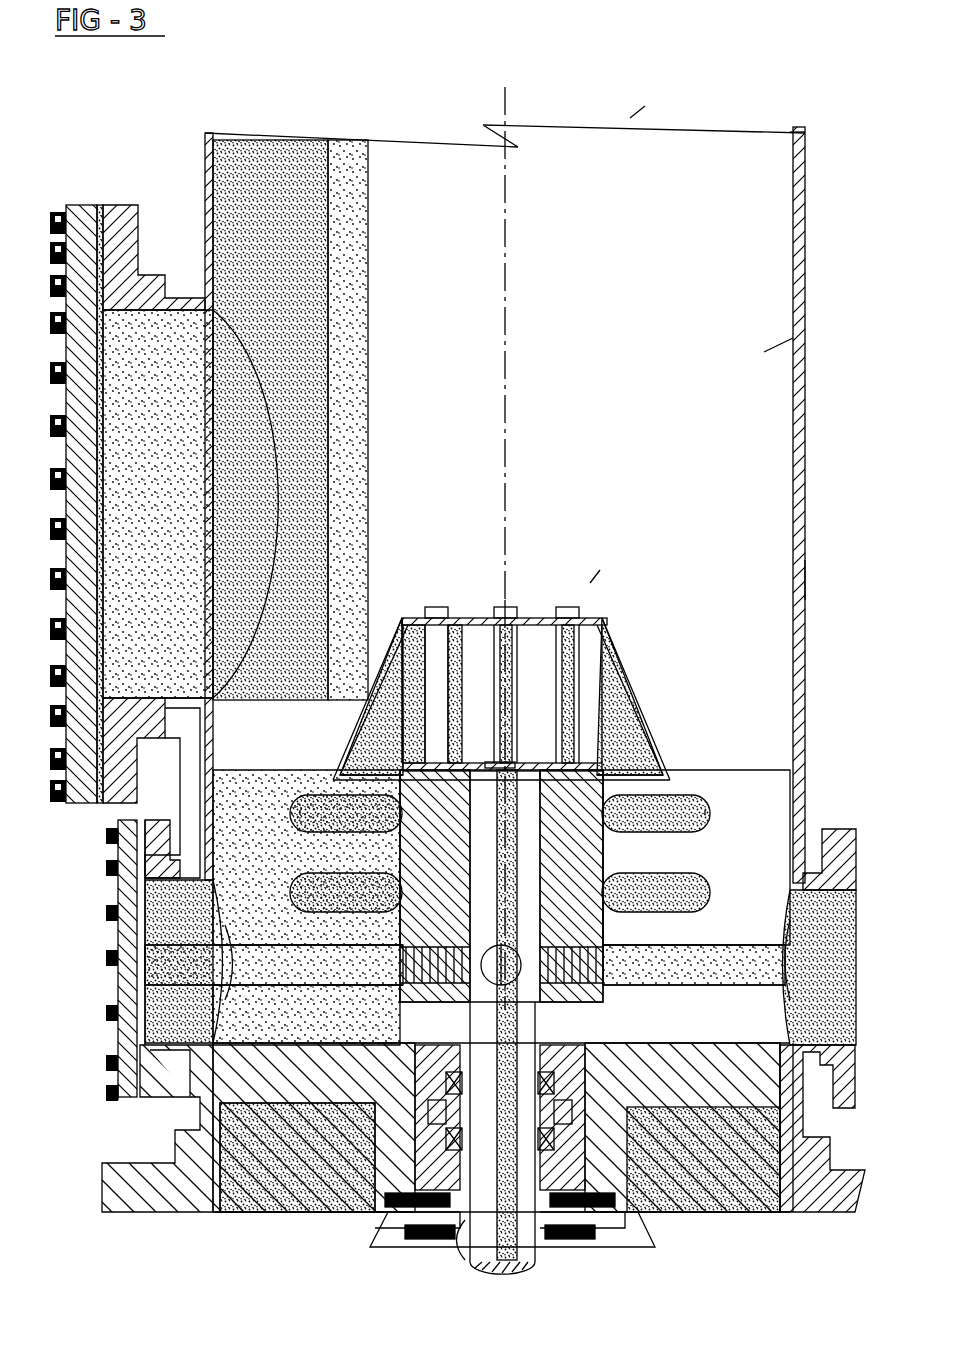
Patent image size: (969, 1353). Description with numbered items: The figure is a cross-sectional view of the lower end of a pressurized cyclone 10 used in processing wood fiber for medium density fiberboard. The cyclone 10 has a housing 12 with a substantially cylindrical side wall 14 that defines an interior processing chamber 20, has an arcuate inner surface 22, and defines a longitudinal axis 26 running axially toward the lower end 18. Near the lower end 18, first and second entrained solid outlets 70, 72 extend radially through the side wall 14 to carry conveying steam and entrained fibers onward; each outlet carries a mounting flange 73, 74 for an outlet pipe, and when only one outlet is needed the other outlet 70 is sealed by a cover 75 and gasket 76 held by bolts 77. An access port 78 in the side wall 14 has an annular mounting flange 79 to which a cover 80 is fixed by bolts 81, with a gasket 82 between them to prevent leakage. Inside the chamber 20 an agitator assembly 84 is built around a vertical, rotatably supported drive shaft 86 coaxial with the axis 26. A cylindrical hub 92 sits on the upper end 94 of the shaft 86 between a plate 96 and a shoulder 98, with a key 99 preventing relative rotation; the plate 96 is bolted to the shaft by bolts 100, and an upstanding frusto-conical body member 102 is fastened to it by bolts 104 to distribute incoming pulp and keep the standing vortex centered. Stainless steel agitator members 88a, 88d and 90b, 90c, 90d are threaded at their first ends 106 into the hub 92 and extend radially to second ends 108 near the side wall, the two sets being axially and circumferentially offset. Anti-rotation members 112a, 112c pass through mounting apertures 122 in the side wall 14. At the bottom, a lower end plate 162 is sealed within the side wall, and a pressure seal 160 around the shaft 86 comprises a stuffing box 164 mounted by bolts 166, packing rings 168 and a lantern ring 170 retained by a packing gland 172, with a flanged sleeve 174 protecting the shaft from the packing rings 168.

The pressurized cyclone 10 is at (630, 118).
The housing 12 is at (806, 264).
The side wall 14 is at (805, 580).
The lower end 18 is at (805, 170).
The interior processing chamber 20 is at (780, 350).
The inner surface 22 is at (475, 333).
The longitudinal axis 26 is at (505, 103).
The first entrained solid outlet 70 is at (118, 988).
The second entrained solid outlet 72 is at (850, 968).
The mounting flange 73 is at (150, 815).
The mounting flange 74 is at (838, 822).
The cover 75 is at (120, 945).
The gasket 76 is at (225, 963).
The bolts 77 is at (108, 870).
The access port 78 is at (185, 557).
The annular mounting flange 79 is at (125, 210).
The cover 80 is at (100, 445).
The bolts 81 is at (55, 235).
The gasket 82 is at (112, 262).
The agitator assembly 84 is at (590, 583).
The drive shaft 86 is at (630, 1080).
The agitator member 88a is at (340, 785).
The agitator member 88d is at (695, 812).
The agitator member 90b is at (157, 1128).
The agitator member 90c is at (475, 990).
The agitator member 90d is at (705, 985).
The cylindrical hub 92 is at (603, 933).
The upper end 94 is at (470, 838).
The plate 96 is at (640, 745).
The shoulder 98 is at (565, 995).
The key 99 is at (590, 790).
The bolts 100 is at (505, 758).
The frusto-conical body member 102 is at (385, 620).
The bolts 104 is at (570, 607).
The first end 106 is at (530, 960).
The second end 108 is at (215, 948).
The anti-rotation member 112a is at (300, 875).
The anti-rotation member 112c is at (695, 890).
The mounting apertures 122 is at (290, 810).
The pressure seal 160 is at (372, 1228).
The lower end plate 162 is at (720, 1120).
The stuffing box 164 is at (610, 1210).
The bolts 166 is at (625, 1240).
The packing rings 168 is at (460, 1170).
The lantern ring 170 is at (620, 1140).
The packing gland 172 is at (583, 1247).
The flanged sleeve 174 is at (460, 1245).